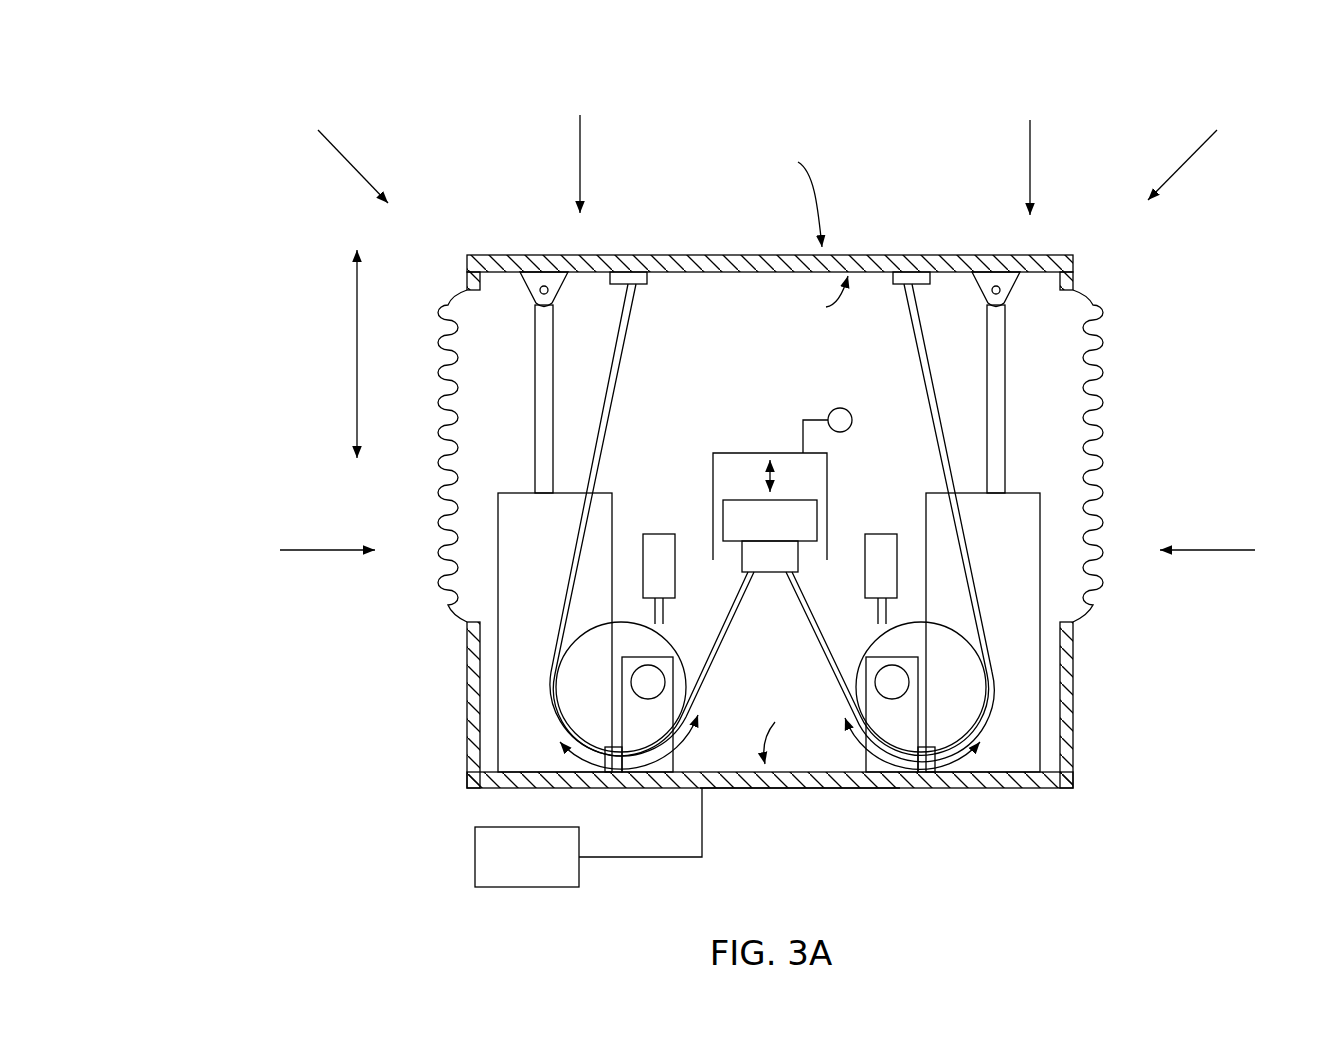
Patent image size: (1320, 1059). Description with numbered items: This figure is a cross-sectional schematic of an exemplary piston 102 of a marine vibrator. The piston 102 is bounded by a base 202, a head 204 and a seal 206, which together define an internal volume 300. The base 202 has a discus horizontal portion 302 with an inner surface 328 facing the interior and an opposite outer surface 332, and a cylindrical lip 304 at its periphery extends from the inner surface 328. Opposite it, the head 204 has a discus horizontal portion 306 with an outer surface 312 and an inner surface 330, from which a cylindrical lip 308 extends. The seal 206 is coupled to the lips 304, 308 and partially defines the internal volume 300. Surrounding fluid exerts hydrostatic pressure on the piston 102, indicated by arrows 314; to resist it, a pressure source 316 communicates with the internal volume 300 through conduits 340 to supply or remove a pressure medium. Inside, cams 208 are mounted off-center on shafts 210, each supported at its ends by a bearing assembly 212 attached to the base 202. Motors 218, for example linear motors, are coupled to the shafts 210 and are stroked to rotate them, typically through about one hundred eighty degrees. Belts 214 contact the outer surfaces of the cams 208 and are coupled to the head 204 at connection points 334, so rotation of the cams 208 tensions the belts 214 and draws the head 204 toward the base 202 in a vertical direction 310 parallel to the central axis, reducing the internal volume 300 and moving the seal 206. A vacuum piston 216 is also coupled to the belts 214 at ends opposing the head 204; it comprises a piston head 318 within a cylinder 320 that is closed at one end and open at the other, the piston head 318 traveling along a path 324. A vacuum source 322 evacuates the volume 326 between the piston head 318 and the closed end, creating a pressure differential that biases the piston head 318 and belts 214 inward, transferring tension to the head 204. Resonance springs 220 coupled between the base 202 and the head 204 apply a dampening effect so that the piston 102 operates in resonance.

The piston 102 is at (273, 100).
The base 202 is at (827, 763).
The head 204 is at (808, 246).
The seal 206 is at (1105, 420).
The cam 208 is at (585, 712).
The shaft 210 is at (645, 683).
The bearing assembly 212 is at (665, 767).
The belt 214 is at (617, 317).
The vacuum piston 216 is at (776, 491).
The motor 218 is at (660, 545).
The resonance spring 220 is at (600, 518).
The internal volume 300 is at (779, 368).
The discus horizontal portion 302 is at (985, 790).
The cylindrical lip 304 is at (1078, 695).
The discus horizontal portion 306 is at (502, 262).
The cylindrical lip 308 is at (467, 265).
The vertical direction 310 is at (357, 338).
The outer surface 312 is at (789, 195).
The arrows 314 is at (350, 163).
The pressure source 316 is at (475, 857).
The piston head 318 is at (805, 524).
The cylinder 320 is at (830, 462).
The vacuum source 322 is at (846, 420).
The path 324 is at (765, 480).
The volume 326 is at (735, 480).
The inner surface 328 is at (773, 729).
The inner surface 330 is at (812, 299).
The outer surface 332 is at (812, 790).
The connection points 334 is at (645, 290).
The conduits 340 is at (662, 858).